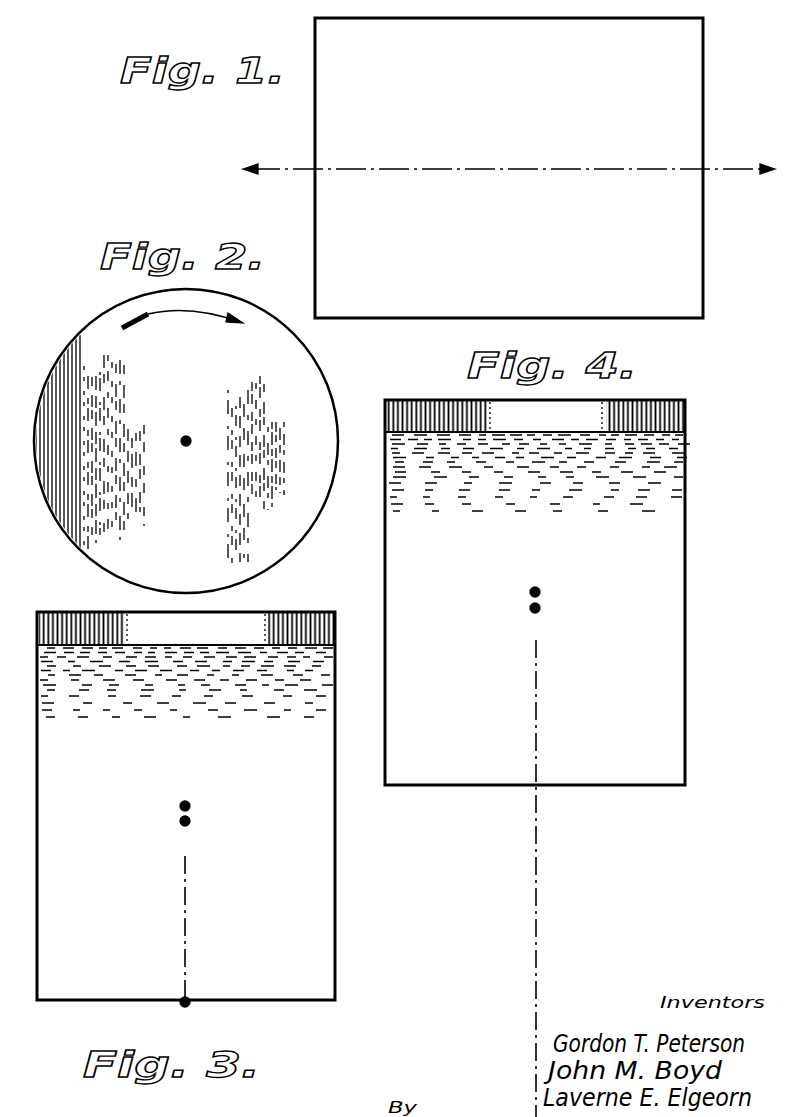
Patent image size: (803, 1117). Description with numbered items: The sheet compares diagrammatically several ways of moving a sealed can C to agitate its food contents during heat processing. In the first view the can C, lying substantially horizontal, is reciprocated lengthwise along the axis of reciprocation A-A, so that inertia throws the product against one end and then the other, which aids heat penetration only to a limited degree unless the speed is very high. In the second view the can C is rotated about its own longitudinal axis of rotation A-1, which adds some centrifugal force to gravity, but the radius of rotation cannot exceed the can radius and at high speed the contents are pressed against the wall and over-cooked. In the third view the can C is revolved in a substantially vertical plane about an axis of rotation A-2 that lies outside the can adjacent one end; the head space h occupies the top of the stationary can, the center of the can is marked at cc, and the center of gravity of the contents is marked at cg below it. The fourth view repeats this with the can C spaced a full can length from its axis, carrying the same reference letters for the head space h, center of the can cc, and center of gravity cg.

In FIG. 1, the can c is at (675, 88).
In FIG. 2, the can c is at (315, 390).
In FIG. 3, the can c is at (337, 880).
In FIG. 4, the can c is at (687, 570).
In FIG. 3, the head space h is at (254, 622).
In FIG. 4, the head space h is at (652, 412).
In FIG. 3, the center of the can cc is at (186, 800).
In FIG. 4, the center of the can cc is at (535, 586).
In FIG. 3, the center of gravity cg is at (186, 832).
In FIG. 4, the center of gravity cg is at (537, 619).
In FIG. 1, the axis of reciprocation A-A is at (557, 176).
In FIG. 2, the axis of rotation A-1 is at (192, 441).
In FIG. 3, the axis of rotation A-2 is at (186, 1008).